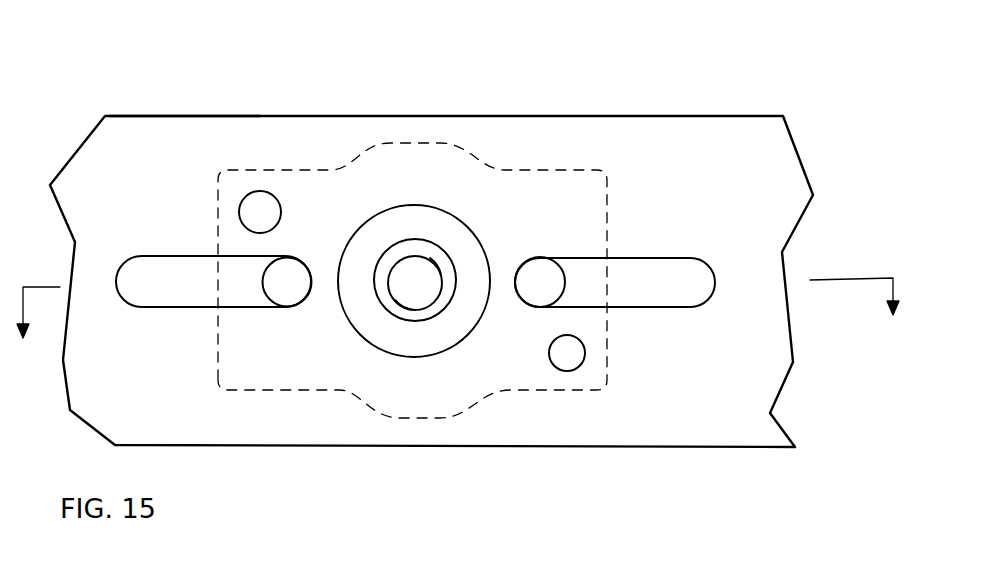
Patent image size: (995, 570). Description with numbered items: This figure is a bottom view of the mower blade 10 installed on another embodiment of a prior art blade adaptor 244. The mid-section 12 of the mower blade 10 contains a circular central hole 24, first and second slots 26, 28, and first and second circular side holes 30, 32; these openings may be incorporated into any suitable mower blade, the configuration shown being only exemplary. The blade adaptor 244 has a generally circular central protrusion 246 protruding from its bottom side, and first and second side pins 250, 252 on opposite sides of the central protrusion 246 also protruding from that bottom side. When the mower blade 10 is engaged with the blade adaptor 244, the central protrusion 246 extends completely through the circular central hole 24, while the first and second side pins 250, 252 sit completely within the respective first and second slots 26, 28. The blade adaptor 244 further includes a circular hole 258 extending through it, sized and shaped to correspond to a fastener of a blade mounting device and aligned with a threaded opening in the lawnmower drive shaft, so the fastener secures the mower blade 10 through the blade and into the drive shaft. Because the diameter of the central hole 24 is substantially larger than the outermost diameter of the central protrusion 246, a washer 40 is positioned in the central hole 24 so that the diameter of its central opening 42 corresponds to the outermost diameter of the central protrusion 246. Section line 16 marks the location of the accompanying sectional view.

The mower blade 10 is at (668, 112).
The mid-section 12 is at (171, 126).
The section line 16 is at (464, 323).
The circular central hole 24 is at (397, 204).
The first slot 26 is at (186, 256).
The second slot 28 is at (632, 258).
The first circular side hole 30 is at (258, 192).
The second circular side hole 32 is at (583, 367).
The washer 40 is at (380, 235).
The central opening 42 is at (384, 260).
The blade adaptor 244 is at (492, 140).
The central protrusion 246 is at (427, 252).
The first side pin 250 is at (283, 280).
The second side pin 252 is at (541, 286).
The circular hole 258 is at (400, 290).